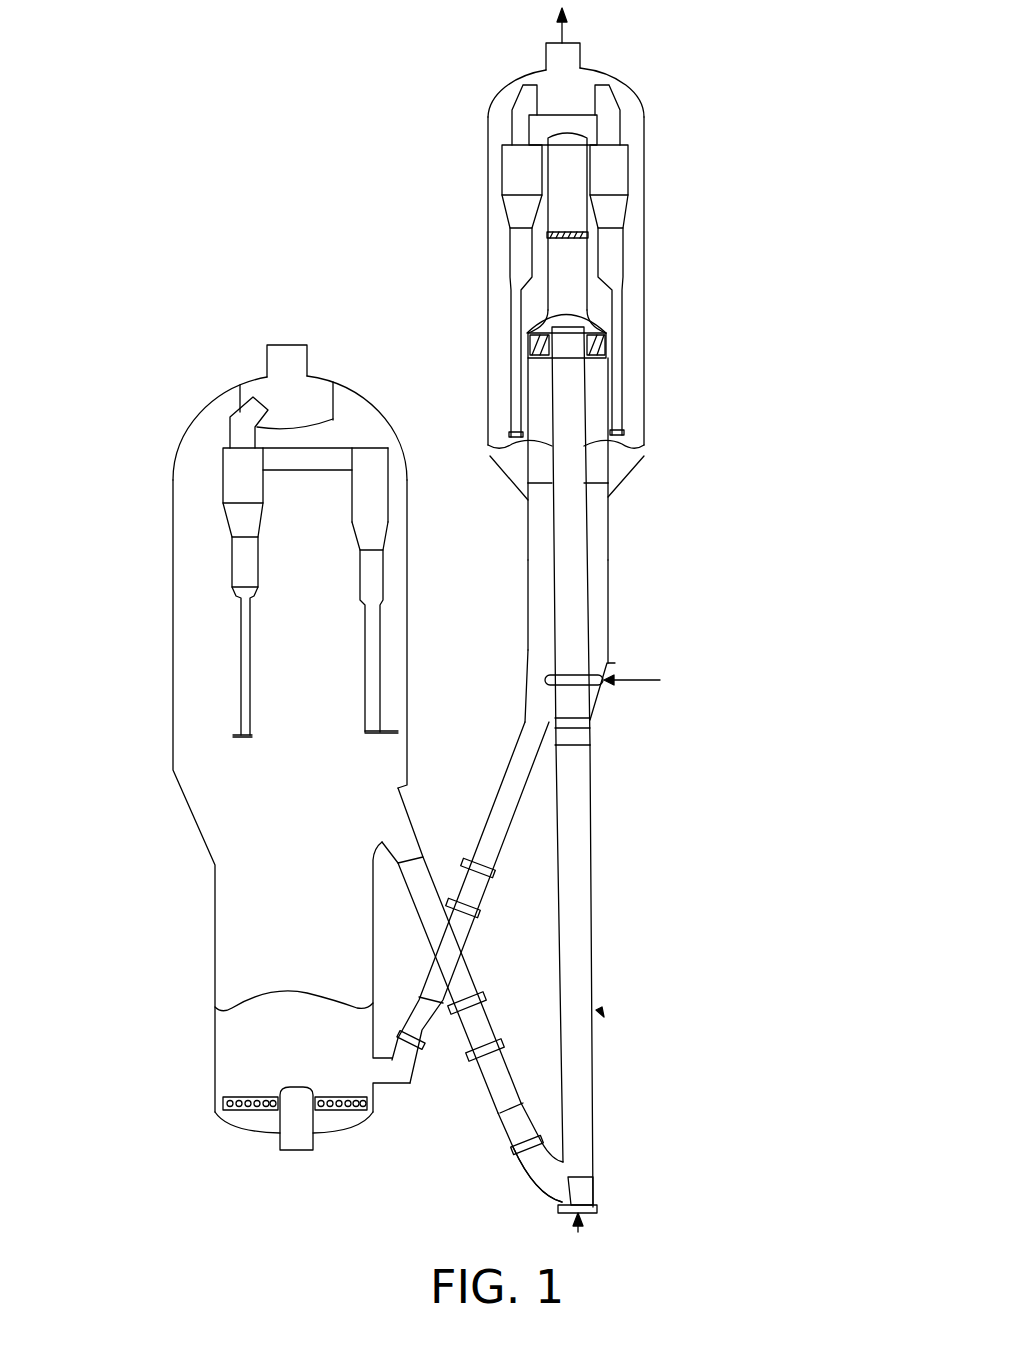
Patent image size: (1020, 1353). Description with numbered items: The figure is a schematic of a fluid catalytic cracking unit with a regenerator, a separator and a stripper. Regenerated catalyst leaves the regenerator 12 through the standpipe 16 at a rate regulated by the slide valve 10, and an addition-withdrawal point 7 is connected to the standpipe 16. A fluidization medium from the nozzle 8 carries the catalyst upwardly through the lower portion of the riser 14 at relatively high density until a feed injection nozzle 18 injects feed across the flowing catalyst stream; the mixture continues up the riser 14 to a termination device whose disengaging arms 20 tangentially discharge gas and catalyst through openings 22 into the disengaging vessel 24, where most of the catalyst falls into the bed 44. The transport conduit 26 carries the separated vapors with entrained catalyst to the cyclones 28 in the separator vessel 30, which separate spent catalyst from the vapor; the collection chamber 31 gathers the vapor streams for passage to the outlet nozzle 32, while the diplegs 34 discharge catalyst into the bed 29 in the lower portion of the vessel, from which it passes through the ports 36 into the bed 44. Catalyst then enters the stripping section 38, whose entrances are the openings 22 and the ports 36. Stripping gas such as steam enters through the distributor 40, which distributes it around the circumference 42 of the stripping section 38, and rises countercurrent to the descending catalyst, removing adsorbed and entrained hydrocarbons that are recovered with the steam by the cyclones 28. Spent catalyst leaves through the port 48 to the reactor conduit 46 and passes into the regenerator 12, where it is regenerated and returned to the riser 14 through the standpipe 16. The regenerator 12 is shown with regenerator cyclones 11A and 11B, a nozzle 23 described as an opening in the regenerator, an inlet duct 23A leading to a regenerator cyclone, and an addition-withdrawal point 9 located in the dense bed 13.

The addition-withdrawal point 7 is at (487, 1093).
The nozzle 8 is at (587, 1180).
The addition-withdrawal point 9 is at (213, 1072).
The slide valve 10 is at (520, 1120).
The regenerator cyclone 11A is at (388, 483).
The regenerator cyclone 11B is at (235, 475).
The regenerator 12 is at (182, 520).
The dense bed 13 is at (230, 1043).
The riser 14 is at (595, 775).
The standpipe 16 is at (603, 335).
The feed injection nozzle 18 is at (600, 1012).
The disengaging arm 20 is at (548, 318).
The opening 22 is at (545, 352).
The nozzle 23 is at (291, 344).
The cyclone inlet duct 23A is at (237, 410).
The disengaging vessel 24 is at (603, 397).
The transport conduit 26 is at (570, 283).
The cyclone 28 is at (513, 224).
The bed 29 is at (492, 462).
The separator vessel 30 is at (628, 222).
The collection chamber 31 is at (588, 78).
The outlet nozzle 32 is at (570, 58).
The dipleg 34 is at (532, 345).
The port 36 is at (527, 480).
The stripping section 38 is at (617, 530).
The distributor 40 is at (597, 683).
The circumference 42 is at (612, 580).
The bed 44 is at (600, 465).
The reactor conduit 46 is at (507, 787).
The port 48 is at (540, 718).